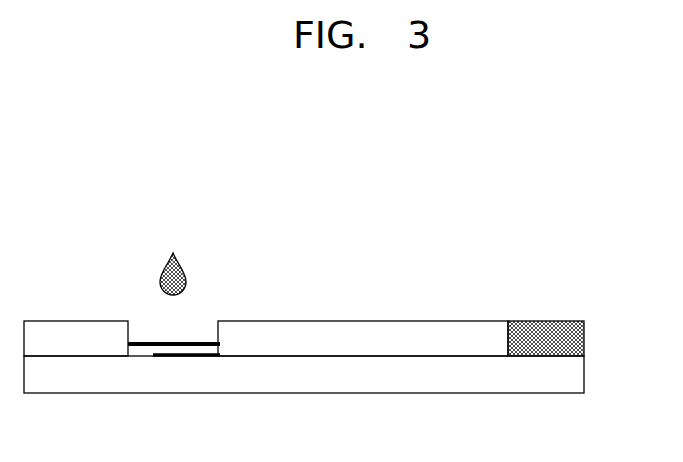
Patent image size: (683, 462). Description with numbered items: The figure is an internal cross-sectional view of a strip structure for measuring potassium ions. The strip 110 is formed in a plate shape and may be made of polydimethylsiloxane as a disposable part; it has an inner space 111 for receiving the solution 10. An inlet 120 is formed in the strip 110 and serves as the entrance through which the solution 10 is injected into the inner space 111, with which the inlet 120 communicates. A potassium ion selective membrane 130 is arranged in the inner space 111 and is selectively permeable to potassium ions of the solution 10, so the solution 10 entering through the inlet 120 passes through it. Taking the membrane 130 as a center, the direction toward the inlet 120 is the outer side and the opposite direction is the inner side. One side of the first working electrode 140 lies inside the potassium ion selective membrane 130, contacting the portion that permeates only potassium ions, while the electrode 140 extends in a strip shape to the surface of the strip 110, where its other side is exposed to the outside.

The solution 10 is at (180, 264).
The strip 110 is at (587, 379).
The inner space 111 is at (156, 339).
The inlet 120 is at (128, 318).
The potassium ion selective membrane 130 is at (191, 347).
The first working electrode 140 is at (587, 356).